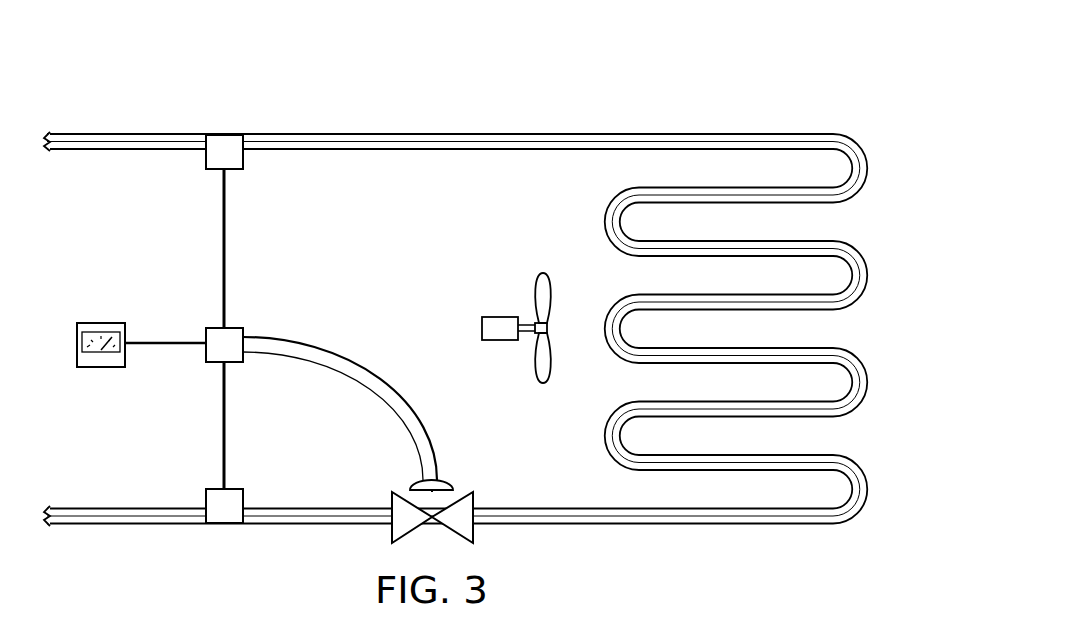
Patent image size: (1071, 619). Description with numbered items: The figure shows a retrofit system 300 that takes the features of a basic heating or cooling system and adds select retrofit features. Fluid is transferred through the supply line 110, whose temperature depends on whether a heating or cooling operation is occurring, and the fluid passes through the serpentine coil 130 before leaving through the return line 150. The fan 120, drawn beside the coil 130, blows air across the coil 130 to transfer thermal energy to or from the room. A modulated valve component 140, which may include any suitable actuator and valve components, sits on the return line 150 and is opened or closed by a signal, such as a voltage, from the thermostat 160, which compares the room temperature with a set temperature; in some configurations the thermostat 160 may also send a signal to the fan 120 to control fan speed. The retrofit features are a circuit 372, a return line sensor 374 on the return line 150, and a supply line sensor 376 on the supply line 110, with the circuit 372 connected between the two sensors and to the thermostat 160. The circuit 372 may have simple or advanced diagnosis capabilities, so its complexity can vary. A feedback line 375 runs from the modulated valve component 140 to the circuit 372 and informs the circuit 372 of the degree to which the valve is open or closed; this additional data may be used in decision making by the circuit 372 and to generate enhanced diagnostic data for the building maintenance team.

The retrofit system 300 is at (395, 69).
The supply line 110 is at (343, 134).
The coil 130 is at (881, 159).
The return line 150 is at (141, 523).
The feedback line 375 is at (366, 365).
The supply line sensor 376 is at (206, 155).
The circuit 372 is at (206, 352).
The return line sensor 374 is at (206, 503).
The thermostat 160 is at (101, 323).
The fan 120 is at (543, 260).
The modulated valve component 140 is at (459, 465).